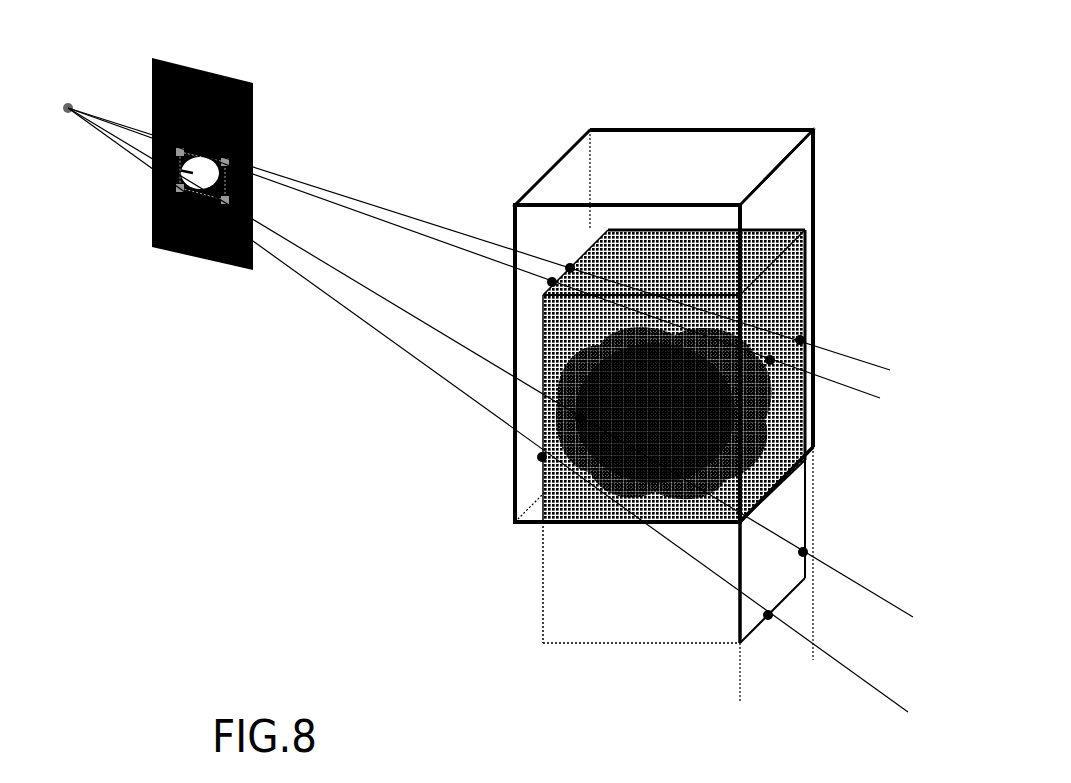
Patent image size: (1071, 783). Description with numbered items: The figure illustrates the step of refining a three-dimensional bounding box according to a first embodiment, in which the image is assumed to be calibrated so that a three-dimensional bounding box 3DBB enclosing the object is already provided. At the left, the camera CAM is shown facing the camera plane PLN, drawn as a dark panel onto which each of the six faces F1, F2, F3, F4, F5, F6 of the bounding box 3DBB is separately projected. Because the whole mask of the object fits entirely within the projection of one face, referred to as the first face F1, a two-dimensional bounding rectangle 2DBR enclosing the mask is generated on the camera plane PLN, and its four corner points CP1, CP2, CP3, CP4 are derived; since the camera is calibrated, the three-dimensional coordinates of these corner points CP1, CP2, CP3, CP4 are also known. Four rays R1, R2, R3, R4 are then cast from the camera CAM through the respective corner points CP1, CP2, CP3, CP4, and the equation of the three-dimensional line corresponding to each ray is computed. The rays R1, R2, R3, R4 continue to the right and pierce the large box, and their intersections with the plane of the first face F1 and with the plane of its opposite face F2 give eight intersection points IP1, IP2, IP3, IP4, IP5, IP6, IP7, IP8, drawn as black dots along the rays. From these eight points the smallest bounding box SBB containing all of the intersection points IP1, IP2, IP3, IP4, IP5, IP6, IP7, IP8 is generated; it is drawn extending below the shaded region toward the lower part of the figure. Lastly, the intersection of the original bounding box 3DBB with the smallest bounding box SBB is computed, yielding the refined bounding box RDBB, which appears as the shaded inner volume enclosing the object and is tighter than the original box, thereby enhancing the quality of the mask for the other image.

The camera plane PLN is at (247, 81).
The camera CAM is at (61, 92).
The 2D bounding rectangle 2DBR is at (154, 177).
The corner point CP1 is at (179, 136).
The corner point CP2 is at (225, 147).
The corner point CP3 is at (227, 218).
The corner point CP4 is at (177, 204).
The ray R1 is at (479, 239).
The ray R2 is at (474, 253).
The ray R3 is at (490, 362).
The ray R4 is at (488, 410).
The 3D bounding box 3DBB is at (814, 154).
The refined 3D bounding box RDBB is at (792, 276).
The smallest 3D bounding box SBB is at (546, 607).
The first face F1 is at (532, 326).
The opposite face F2 is at (830, 288).
The face F3 is at (627, 537).
The face F4 is at (664, 167).
The face F5 is at (641, 408).
The face F6 is at (776, 326).
The intersection point IP1 is at (593, 267).
The intersection point IP2 is at (568, 300).
The intersection point IP3 is at (822, 335).
The intersection point IP4 is at (782, 377).
The intersection point IP5 is at (594, 403).
The intersection point IP6 is at (535, 472).
The intersection point IP7 is at (827, 550).
The intersection point IP8 is at (775, 636).